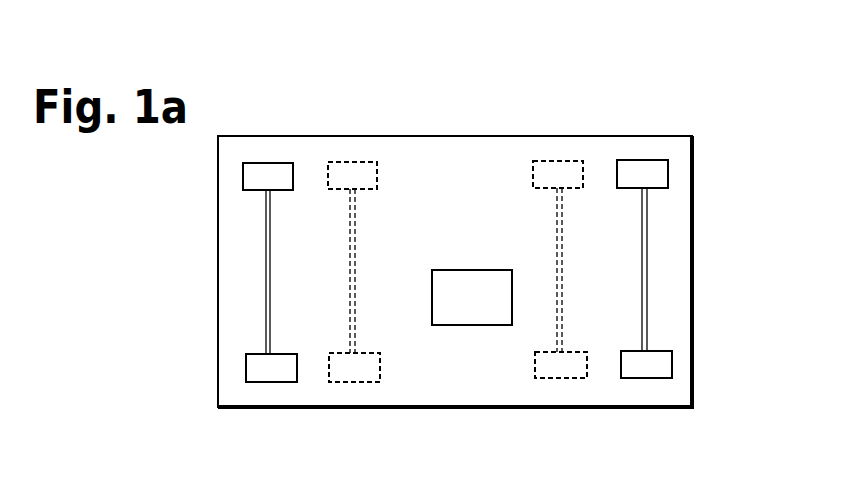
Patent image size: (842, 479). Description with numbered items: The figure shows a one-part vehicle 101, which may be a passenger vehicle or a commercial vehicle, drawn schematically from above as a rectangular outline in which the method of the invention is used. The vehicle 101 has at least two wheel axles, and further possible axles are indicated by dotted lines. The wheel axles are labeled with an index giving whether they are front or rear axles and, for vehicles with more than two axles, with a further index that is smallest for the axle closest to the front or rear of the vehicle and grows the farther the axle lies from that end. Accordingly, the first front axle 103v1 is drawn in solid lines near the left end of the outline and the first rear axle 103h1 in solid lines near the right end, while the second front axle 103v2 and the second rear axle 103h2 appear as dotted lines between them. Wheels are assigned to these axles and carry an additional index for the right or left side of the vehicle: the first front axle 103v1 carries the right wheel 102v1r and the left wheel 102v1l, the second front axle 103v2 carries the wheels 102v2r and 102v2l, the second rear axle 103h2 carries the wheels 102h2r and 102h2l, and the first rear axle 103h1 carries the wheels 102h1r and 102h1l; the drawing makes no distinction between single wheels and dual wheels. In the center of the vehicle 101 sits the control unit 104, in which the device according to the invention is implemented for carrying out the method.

The one-part vehicle 101 is at (688, 312).
The right wheel of the first front axle 102v1r is at (263, 178).
The right wheel of the second front axle 102v2r is at (349, 175).
The right wheel of the second rear axle 102h2r is at (561, 172).
The right wheel of the first rear axle 102h1r is at (645, 175).
The left wheel of the first front axle 102v1l is at (270, 375).
The left wheel of the second front axle 102v2l is at (352, 375).
The left wheel of the second rear axle 102h2l is at (565, 375).
The left wheel of the first rear axle 102h1l is at (648, 372).
The first front axle 103v1 is at (298, 252).
The second front axle 103v2 is at (383, 250).
The second rear axle 103h2 is at (557, 254).
The first rear axle 103h1 is at (642, 256).
The control unit 104 is at (455, 318).